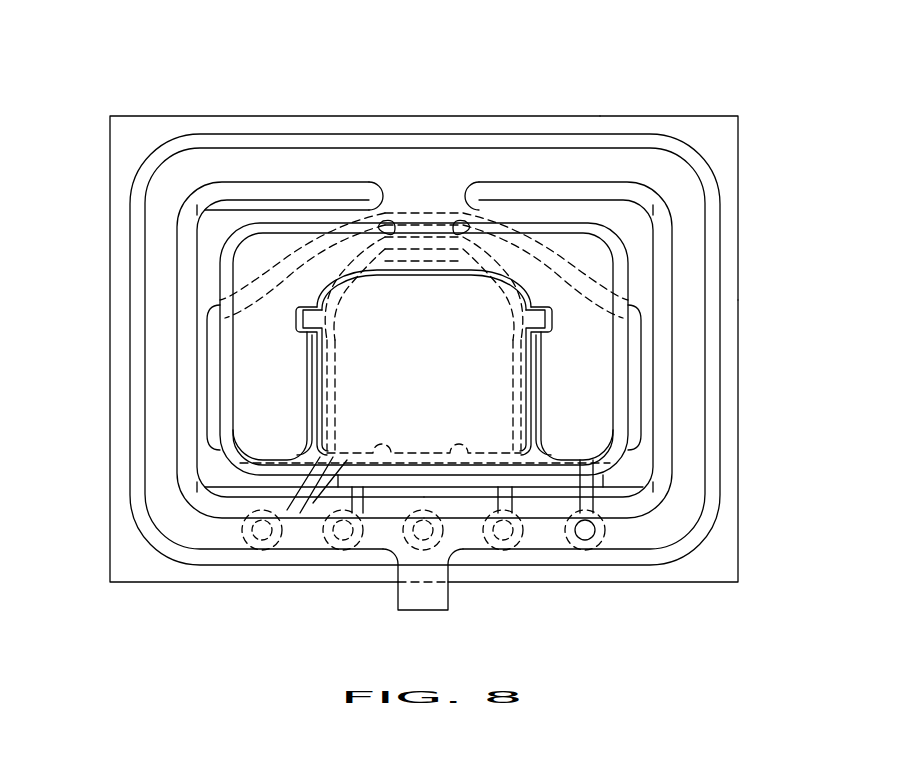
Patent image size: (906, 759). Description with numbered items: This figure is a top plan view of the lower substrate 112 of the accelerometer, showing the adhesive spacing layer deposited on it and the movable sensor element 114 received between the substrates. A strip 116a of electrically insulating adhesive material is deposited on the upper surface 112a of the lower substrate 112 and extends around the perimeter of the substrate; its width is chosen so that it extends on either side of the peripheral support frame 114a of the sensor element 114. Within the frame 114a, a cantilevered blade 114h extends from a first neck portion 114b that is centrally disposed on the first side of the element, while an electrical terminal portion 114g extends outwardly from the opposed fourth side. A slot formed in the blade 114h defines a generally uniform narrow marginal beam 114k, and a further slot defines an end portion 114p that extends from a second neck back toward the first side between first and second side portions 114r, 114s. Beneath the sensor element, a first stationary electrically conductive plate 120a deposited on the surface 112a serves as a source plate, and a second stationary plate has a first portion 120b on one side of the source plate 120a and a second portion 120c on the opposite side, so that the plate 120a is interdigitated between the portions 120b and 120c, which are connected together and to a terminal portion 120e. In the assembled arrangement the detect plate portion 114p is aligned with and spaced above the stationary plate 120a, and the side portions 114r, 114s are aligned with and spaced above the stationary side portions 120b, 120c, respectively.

The lower substrate 112 is at (738, 329).
The upper surface of lower substrate 112a is at (713, 147).
The movable sensor element 114 is at (550, 136).
The peripheral support frame 114a is at (687, 369).
The first neck portion 114b is at (425, 185).
The electrical terminal portion 114g is at (430, 593).
The cantilevered blade 114h is at (613, 230).
The marginal beam 114k is at (252, 192).
The end portion 114p is at (445, 381).
The first side portion 114r is at (292, 401).
The second side portion 114s is at (597, 391).
The strip of electrically insulating adhesive material 116a is at (187, 285).
The first stationary electrically conductive plate 120a is at (500, 421).
The first portion of second stationary plate 120b is at (207, 380).
The second portion of second stationary plate 120c is at (632, 380).
The terminal portion 120e is at (210, 472).